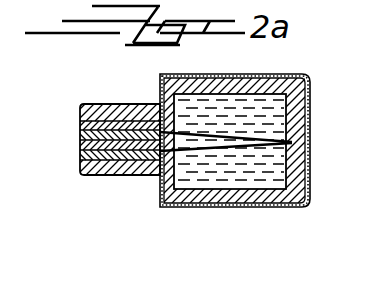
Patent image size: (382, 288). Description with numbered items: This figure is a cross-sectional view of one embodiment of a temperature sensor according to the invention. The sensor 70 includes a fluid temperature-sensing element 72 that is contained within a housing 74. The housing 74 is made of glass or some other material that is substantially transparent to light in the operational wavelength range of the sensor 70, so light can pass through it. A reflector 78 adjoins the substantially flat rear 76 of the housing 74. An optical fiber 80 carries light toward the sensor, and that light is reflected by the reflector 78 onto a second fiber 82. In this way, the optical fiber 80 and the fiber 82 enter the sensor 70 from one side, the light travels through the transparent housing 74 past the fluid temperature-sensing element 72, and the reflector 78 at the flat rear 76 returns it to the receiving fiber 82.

The sensor 70 is at (130, 236).
The fluid temperature-sensing element 72 is at (217, 178).
The housing 74 is at (148, 176).
The substantially flat rear 76 is at (281, 170).
The reflector 78 is at (308, 113).
The optical fiber 80 is at (79, 136).
The fiber 82 is at (80, 158).